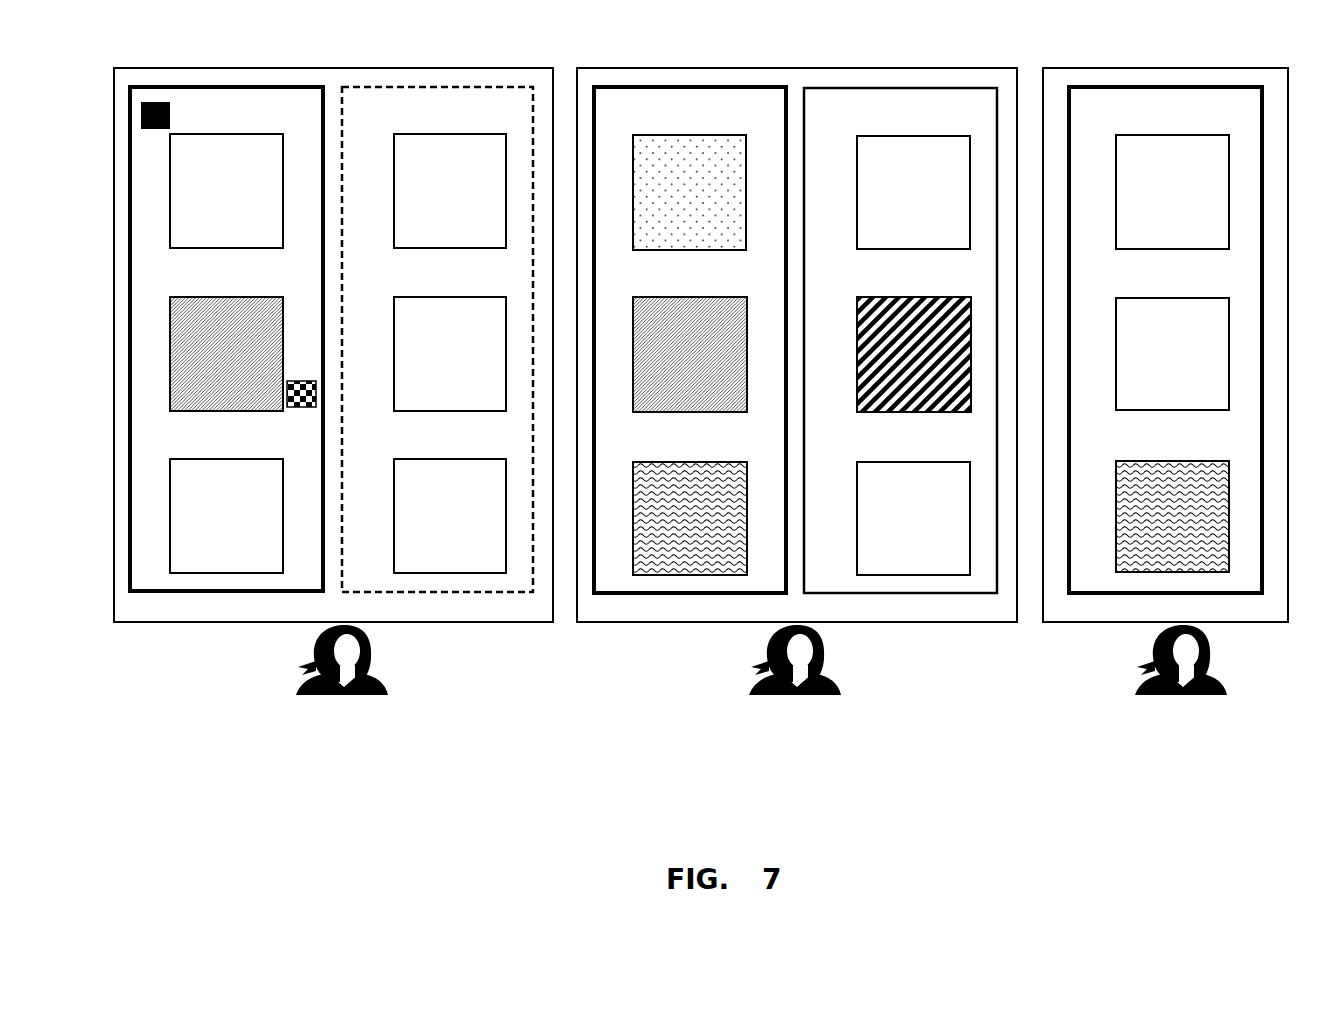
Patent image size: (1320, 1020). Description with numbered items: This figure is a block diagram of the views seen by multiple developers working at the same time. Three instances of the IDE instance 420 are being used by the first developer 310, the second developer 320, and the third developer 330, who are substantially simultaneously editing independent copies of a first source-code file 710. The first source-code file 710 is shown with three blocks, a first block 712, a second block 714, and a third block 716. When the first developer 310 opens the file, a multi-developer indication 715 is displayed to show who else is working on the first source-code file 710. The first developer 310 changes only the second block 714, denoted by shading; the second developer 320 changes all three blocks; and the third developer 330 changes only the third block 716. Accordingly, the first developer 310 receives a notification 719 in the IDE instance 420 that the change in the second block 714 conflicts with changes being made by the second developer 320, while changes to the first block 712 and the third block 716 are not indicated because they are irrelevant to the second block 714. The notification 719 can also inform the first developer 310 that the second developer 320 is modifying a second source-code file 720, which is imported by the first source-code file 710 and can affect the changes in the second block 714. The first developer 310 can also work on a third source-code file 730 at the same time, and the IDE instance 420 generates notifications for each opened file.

The IDE instance 420 is at (218, 623).
The first source-code file 710 is at (212, 87).
The first block 712 is at (229, 133).
The second block 714 is at (225, 296).
The multi-developer indication 715 is at (155, 102).
The third block 716 is at (222, 462).
The notification 719 is at (304, 380).
The second source-code file 720 is at (838, 90).
The third source-code file 730 is at (386, 89).
The first developer 310 is at (338, 671).
The second developer 320 is at (791, 672).
The third developer 330 is at (1180, 671).